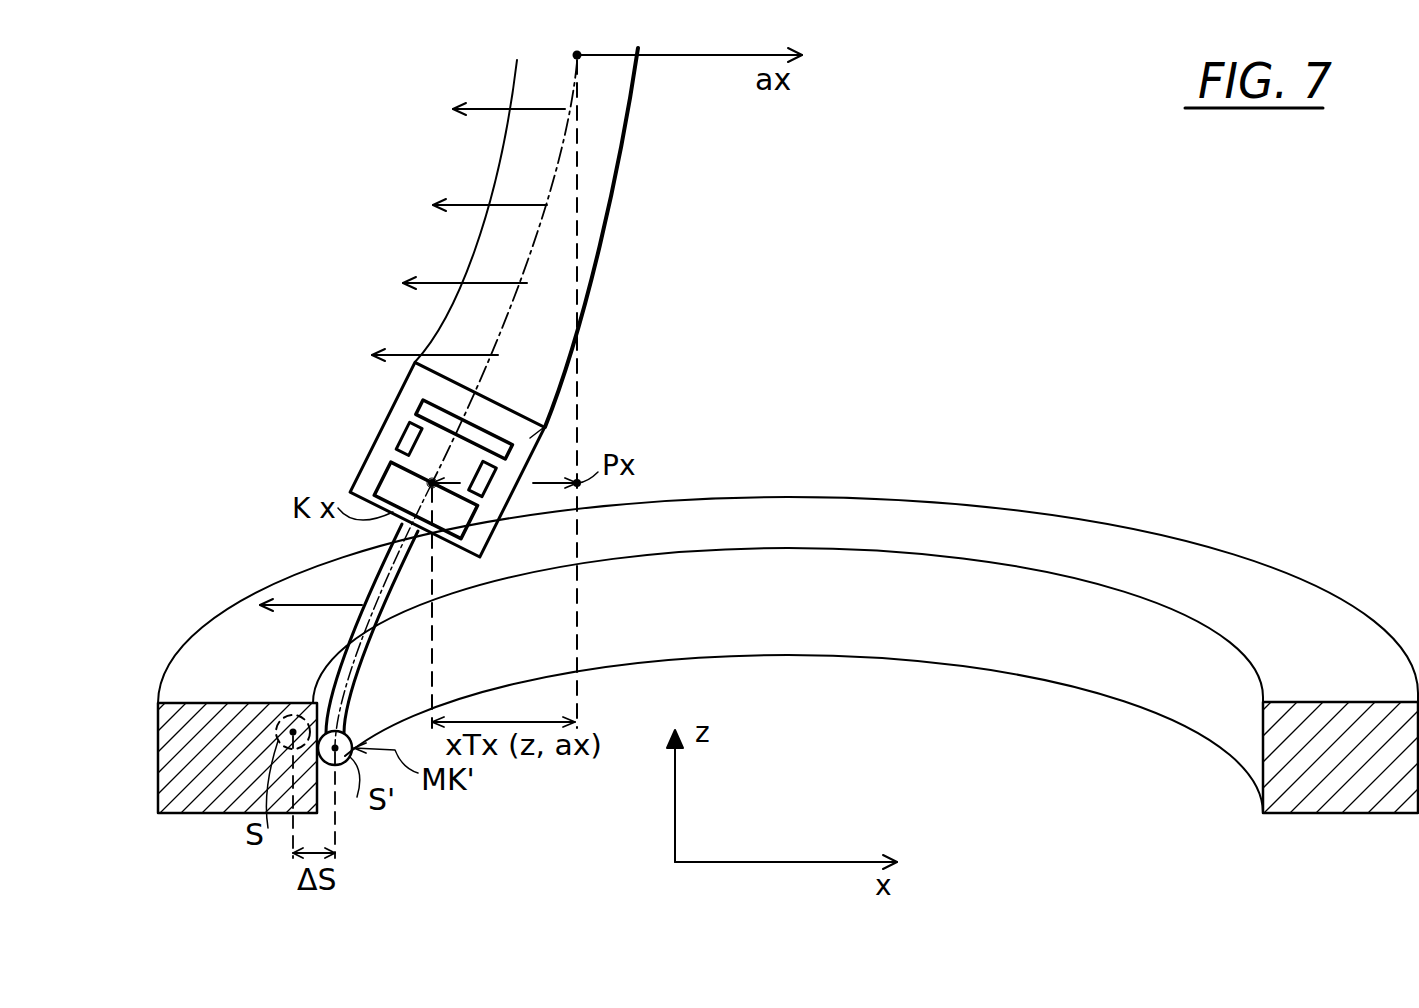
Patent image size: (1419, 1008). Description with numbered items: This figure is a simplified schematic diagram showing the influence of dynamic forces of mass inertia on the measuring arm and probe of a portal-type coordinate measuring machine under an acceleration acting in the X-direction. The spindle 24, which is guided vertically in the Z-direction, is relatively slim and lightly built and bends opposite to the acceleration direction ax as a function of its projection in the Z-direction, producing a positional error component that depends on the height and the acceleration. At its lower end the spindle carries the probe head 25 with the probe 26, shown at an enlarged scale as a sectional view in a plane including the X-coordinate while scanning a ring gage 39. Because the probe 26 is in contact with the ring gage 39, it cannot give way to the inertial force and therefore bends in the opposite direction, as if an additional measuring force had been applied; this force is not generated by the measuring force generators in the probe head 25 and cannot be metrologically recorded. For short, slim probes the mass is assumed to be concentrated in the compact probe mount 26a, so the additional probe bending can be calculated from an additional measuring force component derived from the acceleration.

The spindle 24 is at (623, 162).
The probe head 25 is at (392, 402).
The probe 26 is at (370, 563).
The probe mount 26a is at (432, 483).
The ring gage 39 is at (1017, 510).